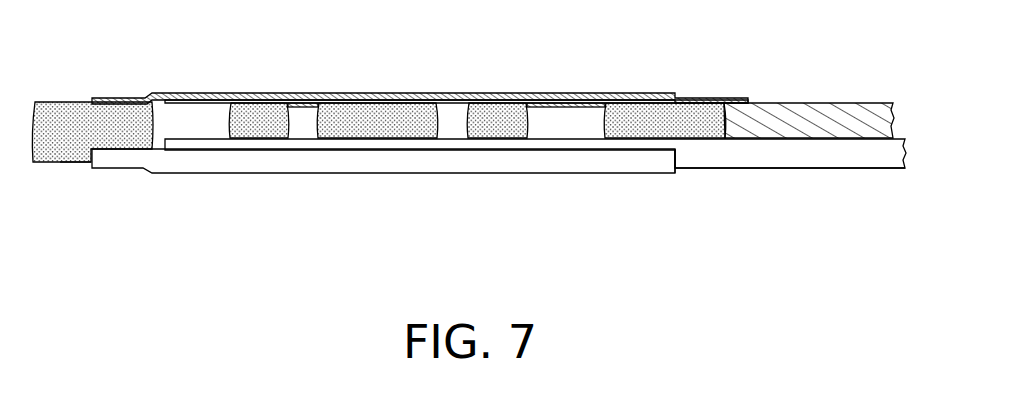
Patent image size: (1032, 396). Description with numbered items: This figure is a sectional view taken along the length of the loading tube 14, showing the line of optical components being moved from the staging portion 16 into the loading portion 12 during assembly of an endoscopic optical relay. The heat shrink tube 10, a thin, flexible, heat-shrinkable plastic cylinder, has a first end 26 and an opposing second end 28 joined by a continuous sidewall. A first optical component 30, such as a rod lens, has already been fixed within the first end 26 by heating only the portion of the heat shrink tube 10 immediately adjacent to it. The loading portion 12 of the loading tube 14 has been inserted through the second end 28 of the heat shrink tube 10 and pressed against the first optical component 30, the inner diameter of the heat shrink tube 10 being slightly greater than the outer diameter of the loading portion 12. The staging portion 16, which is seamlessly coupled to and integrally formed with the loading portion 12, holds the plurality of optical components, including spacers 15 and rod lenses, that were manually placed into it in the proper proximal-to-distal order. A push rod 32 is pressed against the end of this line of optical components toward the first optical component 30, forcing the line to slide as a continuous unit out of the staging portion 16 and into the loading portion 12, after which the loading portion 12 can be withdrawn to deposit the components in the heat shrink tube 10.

The heat shrink tube 10 is at (298, 174).
The loading portion 12 is at (700, 95).
The loading tube 14 is at (793, 172).
The spacers 15 is at (306, 101).
The staging portion 16 is at (863, 153).
The first end 26 is at (89, 162).
The second end 28 is at (676, 163).
The first optical component 30 is at (53, 112).
The push rod 32 is at (860, 111).